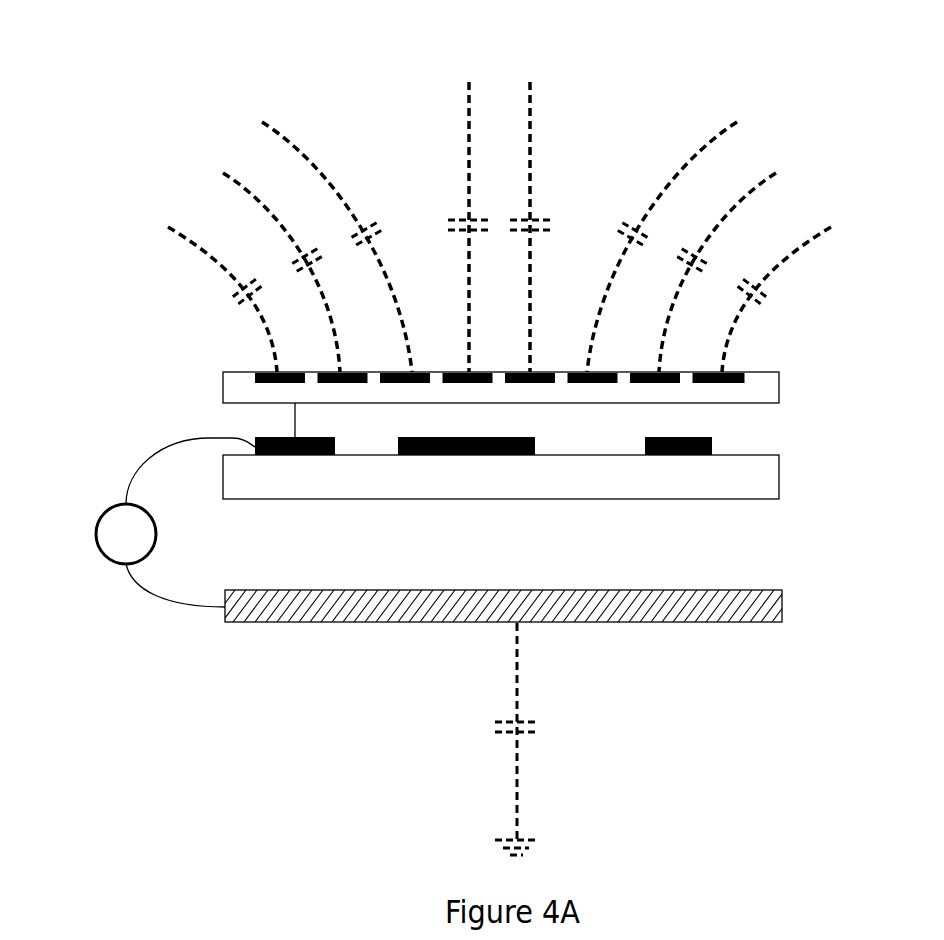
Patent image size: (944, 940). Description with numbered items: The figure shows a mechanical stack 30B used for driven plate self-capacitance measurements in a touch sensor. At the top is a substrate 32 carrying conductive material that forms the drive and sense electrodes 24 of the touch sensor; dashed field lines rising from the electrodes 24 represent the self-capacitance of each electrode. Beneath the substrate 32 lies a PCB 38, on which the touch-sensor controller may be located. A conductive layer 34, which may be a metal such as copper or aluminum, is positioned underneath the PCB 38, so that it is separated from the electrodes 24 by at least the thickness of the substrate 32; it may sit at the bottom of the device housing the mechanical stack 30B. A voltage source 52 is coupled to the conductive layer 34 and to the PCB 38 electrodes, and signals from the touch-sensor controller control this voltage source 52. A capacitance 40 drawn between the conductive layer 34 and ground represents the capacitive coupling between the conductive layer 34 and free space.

The mechanical stack 30B is at (517, 58).
The substrate 32 is at (781, 390).
The drive and sense electrodes 24 is at (253, 380).
The PCB 38 is at (781, 477).
The voltage source 52 is at (94, 533).
The conductive layer 34 is at (784, 607).
The capacitance 40 is at (539, 728).